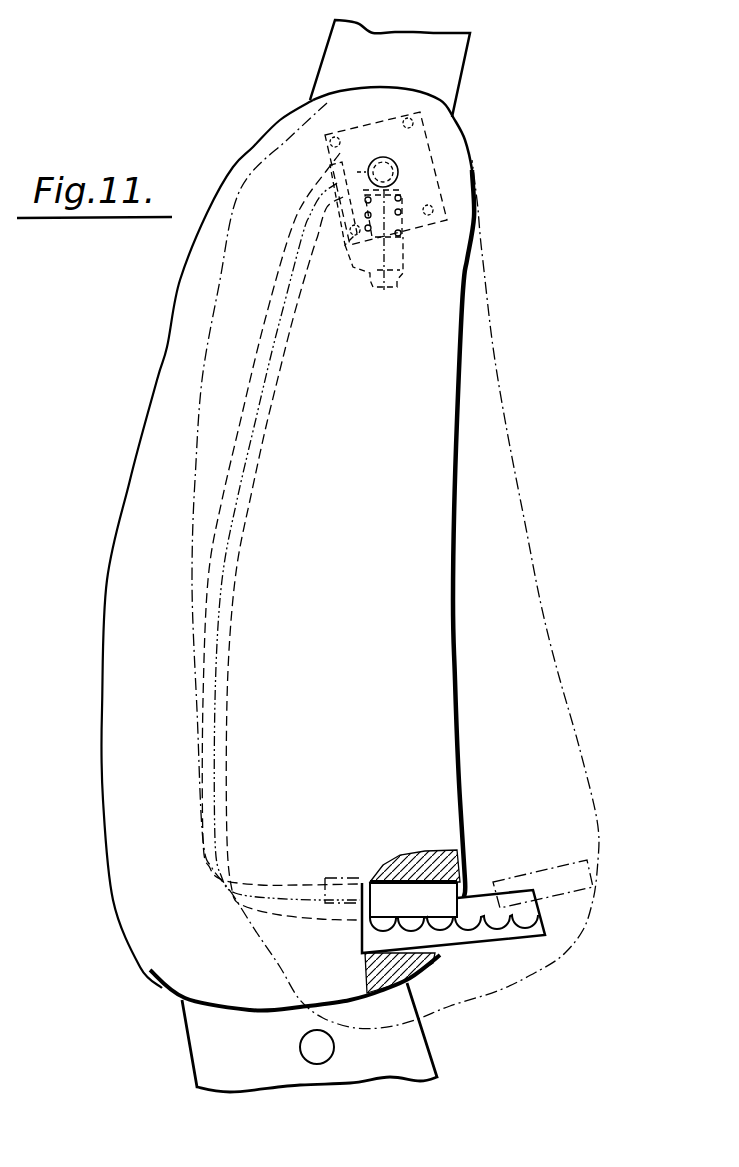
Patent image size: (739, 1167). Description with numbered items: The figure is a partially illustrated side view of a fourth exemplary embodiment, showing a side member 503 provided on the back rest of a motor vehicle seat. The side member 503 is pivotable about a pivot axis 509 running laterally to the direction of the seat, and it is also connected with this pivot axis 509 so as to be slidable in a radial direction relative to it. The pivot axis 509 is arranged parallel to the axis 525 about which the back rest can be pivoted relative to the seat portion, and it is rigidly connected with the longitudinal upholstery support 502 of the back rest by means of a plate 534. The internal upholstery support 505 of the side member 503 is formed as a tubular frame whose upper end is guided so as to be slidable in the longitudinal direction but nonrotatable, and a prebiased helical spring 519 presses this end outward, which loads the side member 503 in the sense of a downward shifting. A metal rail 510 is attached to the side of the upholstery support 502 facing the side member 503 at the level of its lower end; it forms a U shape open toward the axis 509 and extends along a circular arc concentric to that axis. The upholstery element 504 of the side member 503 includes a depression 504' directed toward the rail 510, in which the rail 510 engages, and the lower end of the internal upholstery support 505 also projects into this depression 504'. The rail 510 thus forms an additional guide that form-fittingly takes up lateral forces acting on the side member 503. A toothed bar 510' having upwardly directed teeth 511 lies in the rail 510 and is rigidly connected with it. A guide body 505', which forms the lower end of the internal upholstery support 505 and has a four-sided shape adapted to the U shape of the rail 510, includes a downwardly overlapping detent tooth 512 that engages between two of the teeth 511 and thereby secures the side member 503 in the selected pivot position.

The longitudinal upholstery support 502 is at (462, 56).
The side member 503 is at (460, 472).
The upholstery element 504 is at (266, 549).
The depression 504' is at (440, 974).
The internal upholstery support 505 is at (281, 536).
The guide body 505' is at (410, 872).
The pivot axis 509 is at (398, 163).
The rail 510 is at (453, 890).
The toothed bar 510' is at (497, 893).
The teeth 511 is at (420, 922).
The detent tooth 512 is at (368, 928).
The helical spring 519 is at (420, 236).
The axis 525 is at (334, 1050).
The plate 534 is at (440, 167).